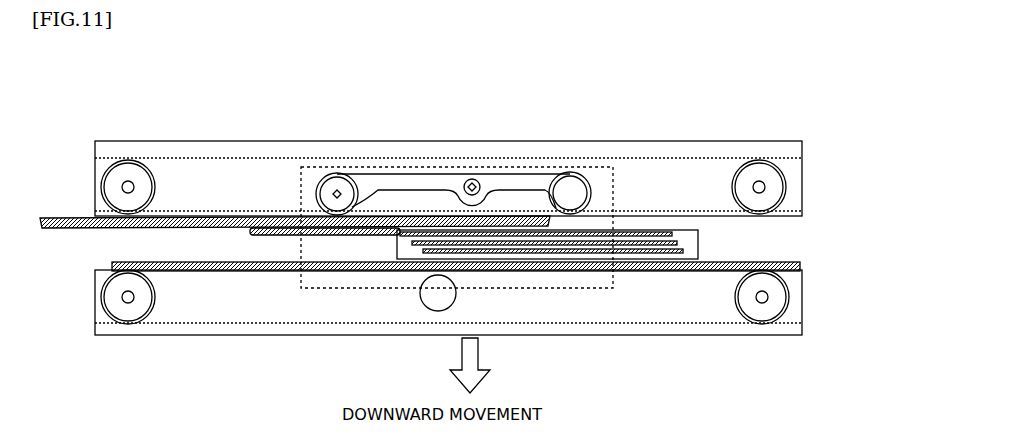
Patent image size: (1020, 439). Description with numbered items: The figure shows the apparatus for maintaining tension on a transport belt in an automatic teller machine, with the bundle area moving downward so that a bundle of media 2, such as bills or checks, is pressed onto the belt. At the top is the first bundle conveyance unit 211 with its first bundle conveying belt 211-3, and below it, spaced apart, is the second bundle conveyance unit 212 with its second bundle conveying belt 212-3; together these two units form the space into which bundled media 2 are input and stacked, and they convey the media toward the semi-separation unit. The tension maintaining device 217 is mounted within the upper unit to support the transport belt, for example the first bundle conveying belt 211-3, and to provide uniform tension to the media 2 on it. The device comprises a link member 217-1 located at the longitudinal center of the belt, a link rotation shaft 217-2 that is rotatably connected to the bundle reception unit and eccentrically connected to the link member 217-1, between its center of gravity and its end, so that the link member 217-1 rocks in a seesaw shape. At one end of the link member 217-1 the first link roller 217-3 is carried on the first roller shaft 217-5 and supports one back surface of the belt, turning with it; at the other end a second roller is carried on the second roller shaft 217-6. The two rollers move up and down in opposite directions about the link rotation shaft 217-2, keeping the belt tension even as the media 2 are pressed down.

The media 2 is at (705, 246).
The first bundle conveyance unit 211 is at (675, 126).
The first bundle conveying belt 211-3 is at (786, 184).
The second bundle conveyance unit 212 is at (677, 352).
The second bundle conveying belt 212-3 is at (789, 294).
The tension maintaining device 217 is at (415, 193).
The link member 217-1 is at (406, 178).
The link rotation shaft 217-2 is at (476, 178).
The first link roller 217-3 is at (325, 175).
The first roller shaft 217-5 is at (334, 194).
The second roller shaft 217-6 is at (582, 176).